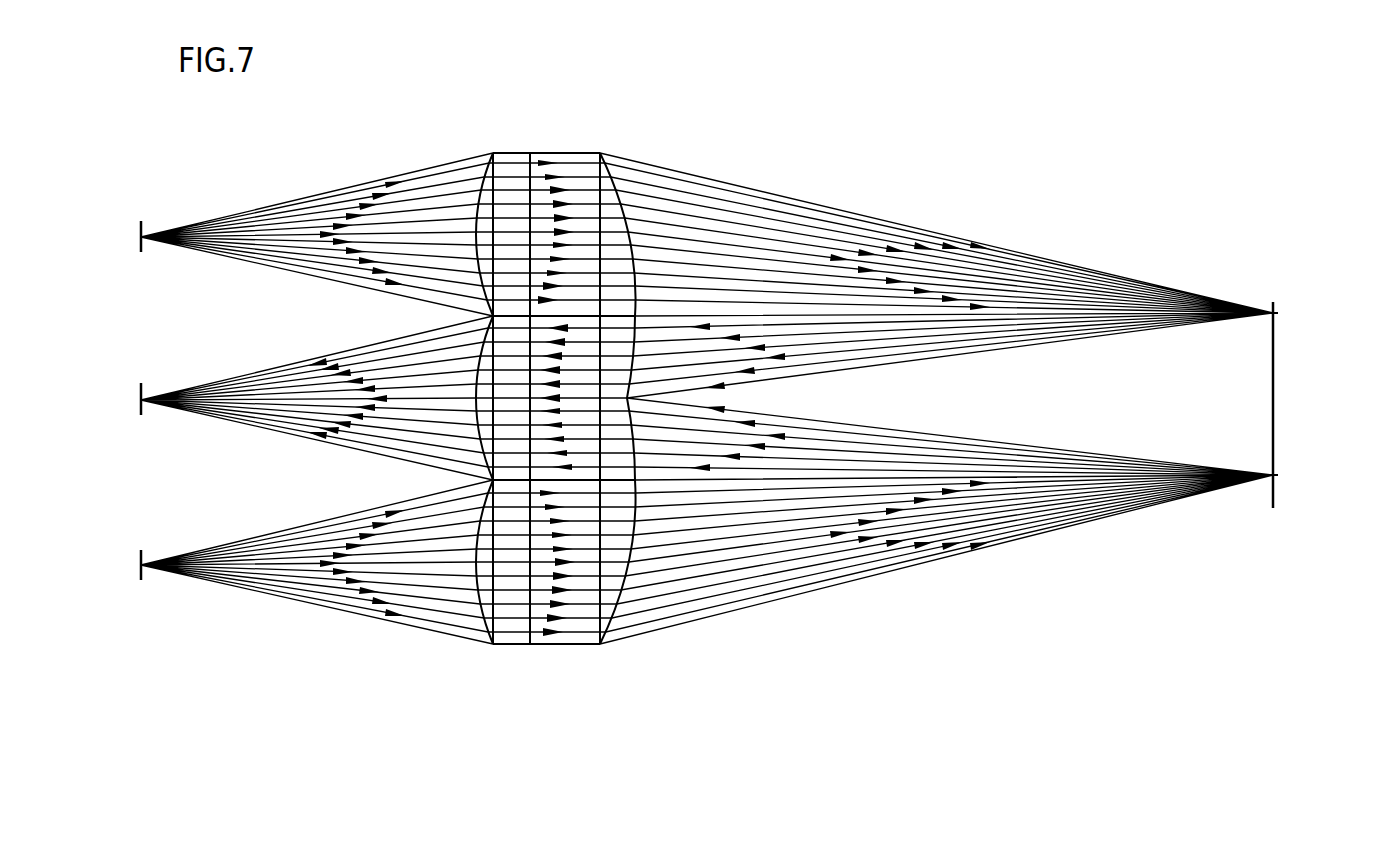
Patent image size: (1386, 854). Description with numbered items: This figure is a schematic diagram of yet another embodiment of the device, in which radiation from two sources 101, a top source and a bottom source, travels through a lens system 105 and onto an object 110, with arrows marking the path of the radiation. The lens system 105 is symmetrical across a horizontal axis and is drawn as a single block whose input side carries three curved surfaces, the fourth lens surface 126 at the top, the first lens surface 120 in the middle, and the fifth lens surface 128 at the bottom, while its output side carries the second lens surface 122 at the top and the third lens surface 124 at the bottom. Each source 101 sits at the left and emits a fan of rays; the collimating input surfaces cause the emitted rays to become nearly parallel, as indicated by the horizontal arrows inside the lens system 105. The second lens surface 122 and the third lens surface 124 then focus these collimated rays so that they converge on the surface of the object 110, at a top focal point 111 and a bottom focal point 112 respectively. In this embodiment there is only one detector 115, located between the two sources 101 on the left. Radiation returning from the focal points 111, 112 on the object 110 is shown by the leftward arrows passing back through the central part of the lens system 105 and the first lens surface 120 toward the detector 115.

The source 101 is at (139, 553).
The detector 115 is at (139, 392).
The lens system 105 is at (553, 662).
The fourth lens surface 126 is at (480, 188).
The first lens surface 120 is at (476, 375).
The fifth lens surface 128 is at (479, 595).
The second lens surface 122 is at (625, 227).
The third lens surface 124 is at (622, 580).
The object 110 is at (1288, 402).
The top focal point 111 is at (1274, 313).
The bottom focal point 112 is at (1273, 475).